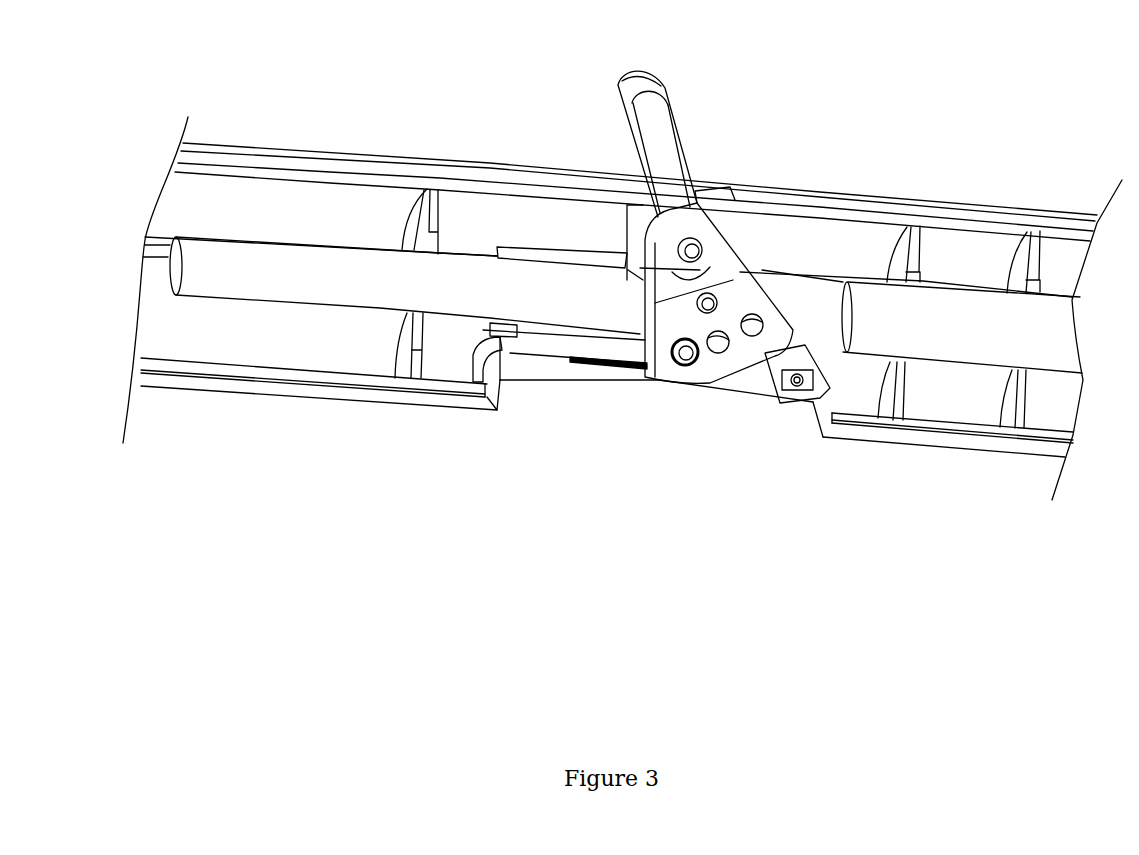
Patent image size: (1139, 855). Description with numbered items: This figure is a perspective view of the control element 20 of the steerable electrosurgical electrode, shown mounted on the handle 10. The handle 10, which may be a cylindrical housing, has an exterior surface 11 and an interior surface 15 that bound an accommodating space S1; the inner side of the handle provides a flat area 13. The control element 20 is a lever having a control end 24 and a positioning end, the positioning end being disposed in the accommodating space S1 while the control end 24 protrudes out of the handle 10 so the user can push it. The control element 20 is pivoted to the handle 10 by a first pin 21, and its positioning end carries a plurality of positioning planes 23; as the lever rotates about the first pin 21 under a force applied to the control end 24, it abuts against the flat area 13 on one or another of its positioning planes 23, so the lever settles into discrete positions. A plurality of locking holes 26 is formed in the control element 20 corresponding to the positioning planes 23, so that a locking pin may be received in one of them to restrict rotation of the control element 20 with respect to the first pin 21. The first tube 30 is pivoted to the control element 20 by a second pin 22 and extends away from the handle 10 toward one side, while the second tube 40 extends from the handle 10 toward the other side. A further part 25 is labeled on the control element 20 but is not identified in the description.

The handle 10 is at (622, 312).
The exterior surface 11 is at (247, 143).
The flat area 13 is at (540, 340).
The interior surface 15 is at (287, 335).
The accommodating space S1 is at (197, 337).
The control element 20 is at (705, 296).
The first pin 21 is at (703, 250).
The second pin 22 is at (715, 303).
The positioning planes 23 is at (640, 360).
The control end 24 is at (610, 110).
The hinge body plate 25 is at (677, 313).
The locking holes 26 is at (718, 353).
The first tube 30 is at (448, 288).
The second tube 40 is at (957, 317).